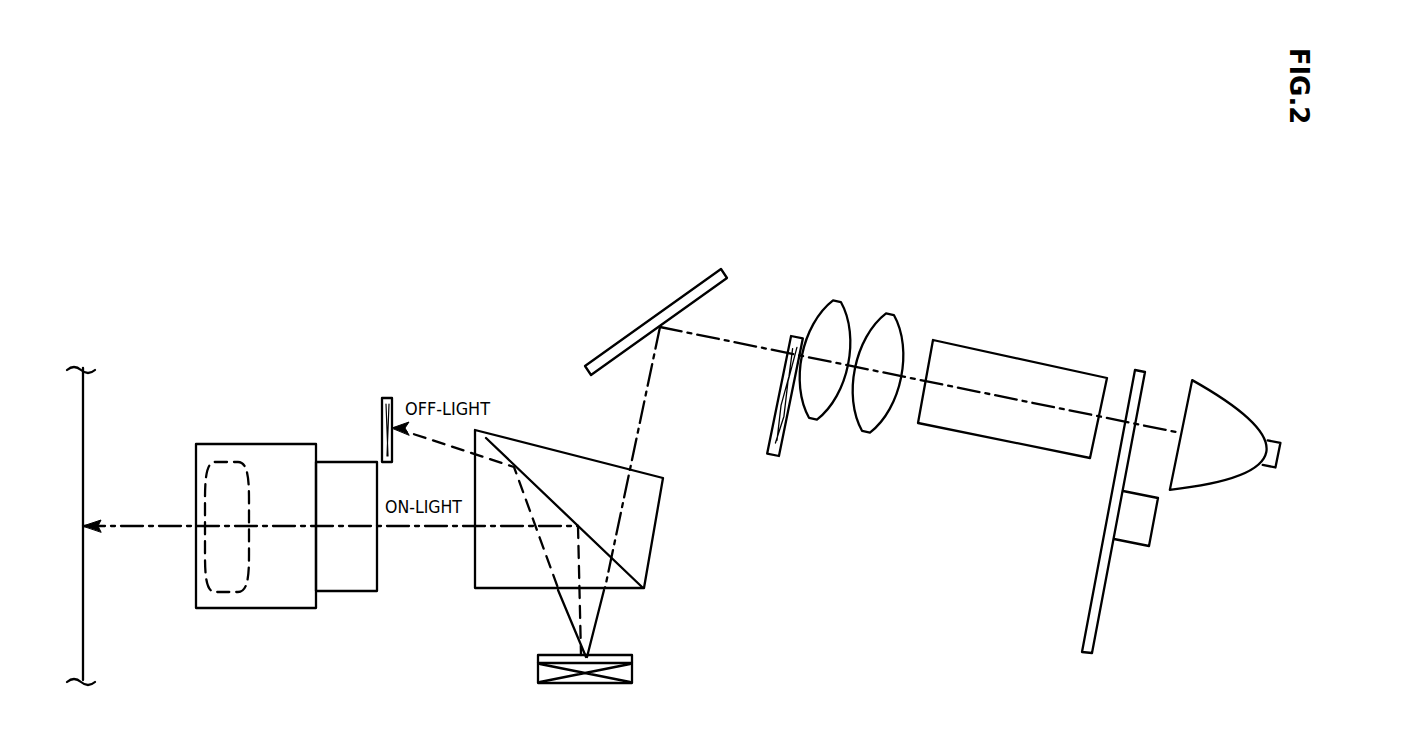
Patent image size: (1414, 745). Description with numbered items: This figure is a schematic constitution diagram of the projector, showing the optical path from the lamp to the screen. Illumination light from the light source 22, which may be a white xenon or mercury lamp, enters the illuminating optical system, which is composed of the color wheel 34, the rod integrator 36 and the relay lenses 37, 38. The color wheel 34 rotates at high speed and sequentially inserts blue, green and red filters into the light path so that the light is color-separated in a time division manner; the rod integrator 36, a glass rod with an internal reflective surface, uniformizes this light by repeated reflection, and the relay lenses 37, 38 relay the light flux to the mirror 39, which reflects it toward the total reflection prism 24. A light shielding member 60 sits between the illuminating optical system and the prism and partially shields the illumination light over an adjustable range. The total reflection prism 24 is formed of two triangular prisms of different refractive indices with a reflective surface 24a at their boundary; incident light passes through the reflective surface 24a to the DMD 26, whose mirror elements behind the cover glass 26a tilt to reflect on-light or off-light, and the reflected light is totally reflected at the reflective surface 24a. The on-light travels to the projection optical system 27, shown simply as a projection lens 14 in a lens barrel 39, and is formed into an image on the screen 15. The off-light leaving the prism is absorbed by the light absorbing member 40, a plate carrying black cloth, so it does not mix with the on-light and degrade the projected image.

The projection lens 14 is at (205, 467).
The screen 15 is at (85, 652).
The light source 22 is at (1218, 385).
The total reflection prism 24 is at (525, 446).
The reflective surface 24a is at (640, 573).
The DMD 26 is at (632, 671).
The cover glass 26a is at (632, 655).
The projection optical system 27 is at (308, 446).
The color wheel 34 is at (1138, 370).
The rod integrator 36 is at (1017, 358).
The relay lens 37 is at (885, 313).
The relay lens 38 is at (835, 298).
The mirror 39 is at (256, 444).
The light absorbing member 40 is at (385, 397).
The light shielding member 60 is at (774, 458).